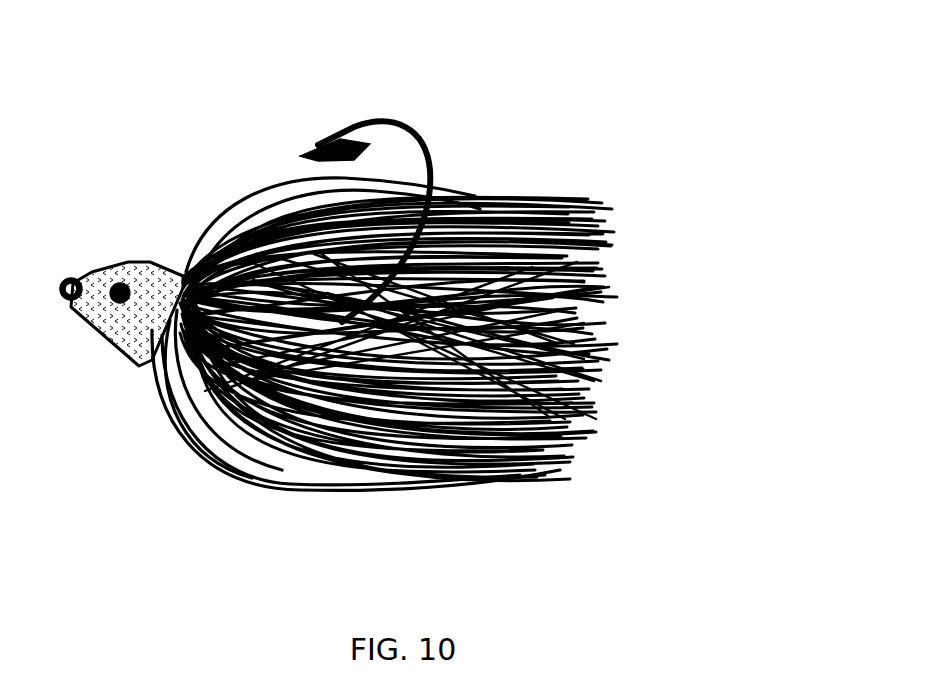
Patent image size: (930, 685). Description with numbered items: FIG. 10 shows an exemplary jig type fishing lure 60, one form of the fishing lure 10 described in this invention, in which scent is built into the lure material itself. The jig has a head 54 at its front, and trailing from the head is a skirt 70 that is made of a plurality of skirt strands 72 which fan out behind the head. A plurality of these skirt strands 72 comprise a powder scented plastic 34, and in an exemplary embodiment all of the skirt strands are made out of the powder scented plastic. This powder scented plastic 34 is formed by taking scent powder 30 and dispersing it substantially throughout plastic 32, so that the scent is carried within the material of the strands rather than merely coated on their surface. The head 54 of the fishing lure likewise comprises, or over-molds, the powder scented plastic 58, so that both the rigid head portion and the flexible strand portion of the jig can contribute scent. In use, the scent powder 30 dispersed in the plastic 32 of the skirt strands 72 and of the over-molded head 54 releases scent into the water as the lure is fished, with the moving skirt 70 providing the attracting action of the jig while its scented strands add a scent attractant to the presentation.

The fishing lure 10 is at (195, 121).
The scent powder 30 is at (427, 492).
The plastic 32 is at (532, 490).
The powder scented plastic 34 is at (552, 200).
The head 54 is at (122, 354).
The powder scented plastic 58 is at (95, 278).
The jig type fishing lure 60 is at (124, 262).
The skirt 70 is at (482, 190).
The skirt strands 72 is at (222, 482).